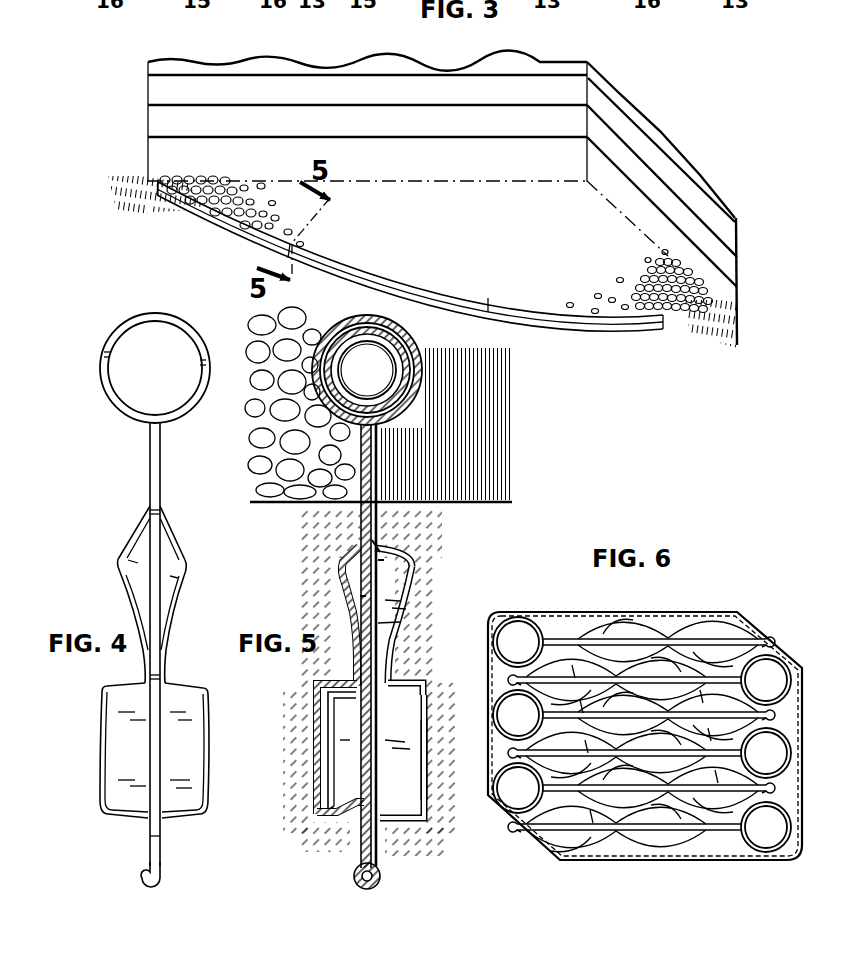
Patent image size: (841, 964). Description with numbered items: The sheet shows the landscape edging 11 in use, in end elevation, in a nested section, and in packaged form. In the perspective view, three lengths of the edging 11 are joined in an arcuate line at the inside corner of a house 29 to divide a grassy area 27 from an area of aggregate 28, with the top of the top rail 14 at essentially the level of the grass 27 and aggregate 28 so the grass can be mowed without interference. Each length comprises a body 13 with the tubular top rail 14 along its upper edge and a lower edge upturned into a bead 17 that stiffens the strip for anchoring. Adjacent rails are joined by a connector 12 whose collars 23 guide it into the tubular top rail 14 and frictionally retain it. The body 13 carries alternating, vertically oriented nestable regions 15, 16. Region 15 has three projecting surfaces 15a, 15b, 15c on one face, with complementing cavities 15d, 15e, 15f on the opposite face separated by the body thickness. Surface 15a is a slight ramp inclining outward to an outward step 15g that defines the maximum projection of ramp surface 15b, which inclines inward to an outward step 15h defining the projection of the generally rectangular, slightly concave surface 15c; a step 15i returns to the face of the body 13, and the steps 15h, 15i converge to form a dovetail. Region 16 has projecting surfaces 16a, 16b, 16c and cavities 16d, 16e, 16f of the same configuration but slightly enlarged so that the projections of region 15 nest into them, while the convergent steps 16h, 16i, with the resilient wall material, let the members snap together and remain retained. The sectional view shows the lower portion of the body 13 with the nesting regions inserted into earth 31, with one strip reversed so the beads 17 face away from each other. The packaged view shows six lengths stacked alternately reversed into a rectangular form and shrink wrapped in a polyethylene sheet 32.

In FIG. 3, the landscape edging 11 is at (401, 283).
In FIG. 4, the landscape edging 11 is at (152, 572).
In FIG. 5, the landscape edging 11 is at (294, 384).
In FIG. 6, the landscape edging 11 is at (638, 716).
In FIG. 5, the connector 12 is at (324, 398).
In FIG. 3, the body 13 is at (222, 231).
In FIG. 4, the body 13 is at (147, 452).
In FIG. 5, the body 13 is at (358, 452).
In FIG. 6, the body 13 is at (645, 631).
In FIG. 3, the top rail 14 is at (197, 214).
In FIG. 4, the top rail 14 is at (139, 323).
In FIG. 5, the top rail 14 is at (367, 370).
In FIG. 6, the top rail 14 is at (507, 614).
In FIG. 4, the nestable region 15 is at (188, 580).
In FIG. 5, the nestable region 15 is at (328, 723).
In FIG. 6, the nestable region 15 is at (693, 620).
In FIG. 4, the projecting surface 15a is at (168, 540).
In FIG. 5, the projecting surface 15a is at (370, 555).
In FIG. 4, the projecting surface 15b is at (178, 618).
In FIG. 5, the projecting surface 15b is at (358, 648).
In FIG. 4, the projecting surface 15c is at (203, 758).
In FIG. 5, the projecting surface 15c is at (340, 778).
In FIG. 5, the cavity 15d is at (386, 561).
In FIG. 5, the cavity 15e is at (368, 622).
In FIG. 5, the cavity 15f is at (336, 782).
In FIG. 4, the outward step 15g is at (181, 563).
In FIG. 4, the outward step 15h is at (181, 688).
In FIG. 5, the outward step 15h is at (340, 684).
In FIG. 4, the step 15i is at (186, 817).
In FIG. 5, the step 15i is at (338, 831).
In FIG. 4, the nestable region 16 is at (119, 565).
In FIG. 5, the nestable region 16 is at (306, 700).
In FIG. 6, the nestable region 16 is at (711, 656).
In FIG. 4, the projecting surface 16a is at (138, 536).
In FIG. 5, the projecting surface 16a is at (363, 534).
In FIG. 4, the projecting surface 16b is at (131, 602).
In FIG. 5, the projecting surface 16b is at (341, 598).
In FIG. 4, the projecting surface 16c is at (103, 758).
In FIG. 5, the projecting surface 16c is at (346, 757).
In FIG. 5, the cavity 16d is at (386, 546).
In FIG. 5, the cavity 16e is at (364, 602).
In FIG. 5, the cavity 16f is at (349, 768).
In FIG. 4, the step 16h is at (117, 687).
In FIG. 5, the step 16h is at (321, 673).
In FIG. 4, the step 16i is at (117, 826).
In FIG. 5, the step 16i is at (324, 830).
In FIG. 4, the bead 17 is at (138, 876).
In FIG. 5, the bead 17 is at (340, 875).
In FIG. 6, the bead 17 is at (771, 646).
In FIG. 5, the collar 23 is at (322, 368).
In FIG. 3, the grassy area 27 is at (137, 192).
In FIG. 5, the grassy area 27 is at (472, 434).
In FIG. 3, the aggregate 28 is at (538, 248).
In FIG. 5, the aggregate 28 is at (262, 331).
In FIG. 3, the house 29 is at (548, 100).
In FIG. 5, the earth 31 is at (506, 505).
In FIG. 6, the sheet 32 is at (758, 623).